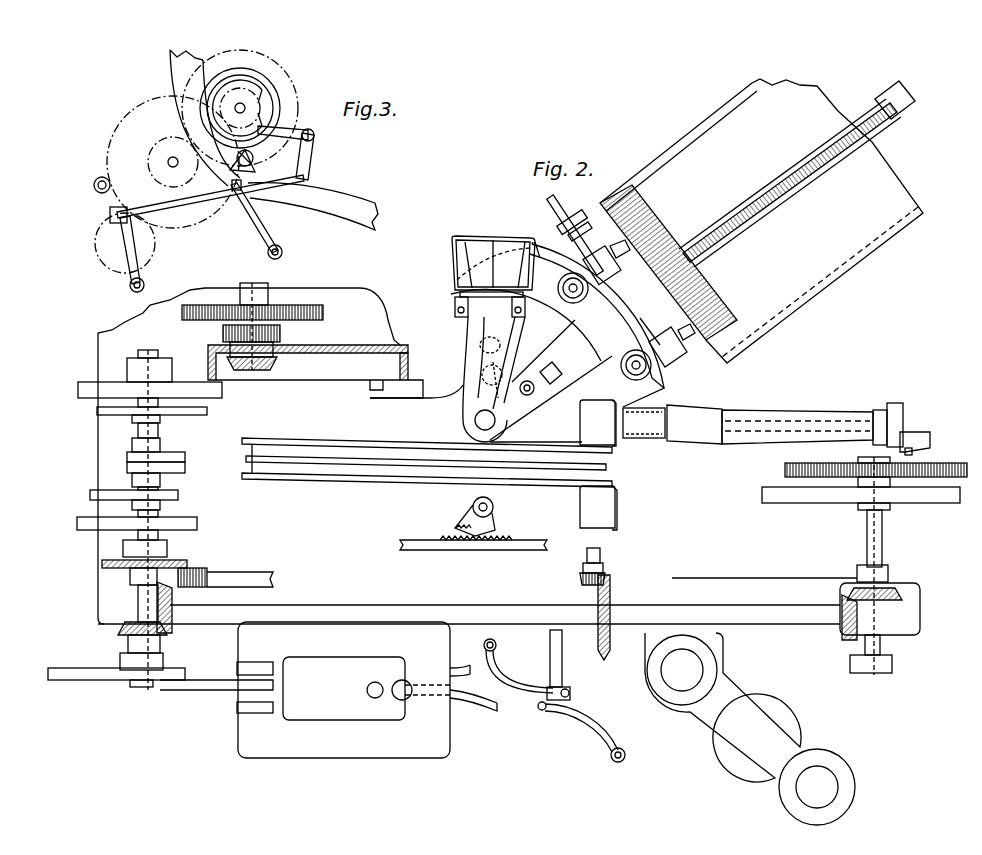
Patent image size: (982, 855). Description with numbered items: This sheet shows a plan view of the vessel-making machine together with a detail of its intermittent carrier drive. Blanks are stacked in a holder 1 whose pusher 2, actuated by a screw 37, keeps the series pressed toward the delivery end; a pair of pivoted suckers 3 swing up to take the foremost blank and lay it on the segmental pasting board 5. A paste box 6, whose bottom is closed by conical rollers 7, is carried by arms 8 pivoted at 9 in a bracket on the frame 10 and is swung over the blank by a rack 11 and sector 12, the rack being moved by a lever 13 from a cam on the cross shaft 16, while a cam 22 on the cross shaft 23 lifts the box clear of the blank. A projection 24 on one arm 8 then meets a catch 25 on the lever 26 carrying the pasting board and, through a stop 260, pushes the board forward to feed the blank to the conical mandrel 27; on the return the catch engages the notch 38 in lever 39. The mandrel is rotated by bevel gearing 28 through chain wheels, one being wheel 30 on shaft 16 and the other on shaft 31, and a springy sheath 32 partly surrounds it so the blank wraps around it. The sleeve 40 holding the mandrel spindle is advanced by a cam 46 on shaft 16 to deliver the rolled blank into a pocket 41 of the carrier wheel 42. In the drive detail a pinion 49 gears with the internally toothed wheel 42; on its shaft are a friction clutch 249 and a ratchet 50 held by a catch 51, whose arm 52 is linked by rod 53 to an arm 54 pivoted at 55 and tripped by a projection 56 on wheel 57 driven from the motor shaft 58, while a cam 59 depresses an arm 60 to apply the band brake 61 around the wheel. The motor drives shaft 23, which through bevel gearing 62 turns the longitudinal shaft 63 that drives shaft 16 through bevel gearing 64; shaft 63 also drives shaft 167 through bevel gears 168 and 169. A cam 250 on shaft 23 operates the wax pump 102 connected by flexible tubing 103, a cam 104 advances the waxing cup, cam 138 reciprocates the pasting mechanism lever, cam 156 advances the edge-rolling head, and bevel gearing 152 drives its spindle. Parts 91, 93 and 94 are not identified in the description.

In FIG. 2, the holder 1 is at (761, 221).
In FIG. 2, the pusher 2 is at (713, 284).
In FIG. 2, the screw 37 is at (768, 188).
In FIG. 2, the suckers 3 is at (621, 287).
In FIG. 2, the pasting board 5 is at (557, 342).
In FIG. 2, the paste box 6 is at (484, 276).
In FIG. 2, the conical rollers 7 is at (495, 264).
In FIG. 2, the arms 8 is at (496, 368).
In FIG. 2, the pivot 9 is at (474, 421).
In FIG. 2, the frame 10 is at (260, 453).
In FIG. 2, the rack 11 is at (480, 548).
In FIG. 2, the sector 12 is at (464, 516).
In FIG. 2, the crank arm or lever 13 is at (473, 551).
In FIG. 2, the shaft 16 is at (880, 566).
In FIG. 2, the cam 22 is at (163, 415).
In FIG. 2, the cross shaft 23 is at (135, 595).
In FIG. 2, the projection 24 is at (479, 344).
In FIG. 2, the catch 25 is at (530, 379).
In FIG. 2, the lever 26 is at (551, 395).
In FIG. 2, the mandrel 27 is at (694, 424).
In FIG. 2, the bevel gearing 28 is at (905, 420).
In FIG. 2, the chain wheel 30 is at (785, 466).
In FIG. 2, the shaft 31 is at (913, 456).
In FIG. 2, the sheath 32 is at (644, 423).
In FIG. 2, the notch 38 is at (500, 370).
In FIG. 2, the lever 39 is at (416, 387).
In FIG. 2, the sleeve 40 is at (797, 419).
In FIG. 2, the pockets 41 is at (598, 465).
In FIG. 3, the carrier wheel 42 is at (313, 206).
In FIG. 2, the carrier wheel 42 is at (427, 467).
In FIG. 2, the cam 46 is at (861, 503).
In FIG. 3, the pinion 49 is at (240, 108).
In FIG. 3, the ratchet 50 is at (298, 84).
In FIG. 3, the catch 51 is at (306, 127).
In FIG. 3, the arm 52 is at (314, 156).
In FIG. 3, the rod 53 is at (210, 196).
In FIG. 3, the arm 54 is at (135, 250).
In FIG. 3, the pivot 55 is at (148, 285).
In FIG. 3, the projection 56 is at (110, 214).
In FIG. 3, the wheel 57 is at (113, 243).
In FIG. 3, the motor shaft 58 is at (89, 185).
In FIG. 3, the cam 59 is at (230, 181).
In FIG. 3, the arm 60 is at (255, 221).
In FIG. 2, the band brake 61 is at (608, 467).
In FIG. 2, the bevel gearing 62 is at (133, 626).
In FIG. 2, the longitudinal shaft 63 is at (477, 601).
In FIG. 2, the bevel gearing 64 is at (880, 628).
In FIG. 2, the plate 91 is at (143, 397).
In FIG. 2, the worm wheel 93 is at (104, 560).
In FIG. 2, the worm 94 is at (212, 591).
In FIG. 2, the pump 102 is at (343, 690).
In FIG. 2, the flexible tubing 103 is at (510, 670).
In FIG. 2, the cam 104 is at (537, 726).
In FIG. 2, the cam 138 is at (130, 518).
In FIG. 2, the bevel gearing 152 is at (252, 330).
In FIG. 2, the cam 156 is at (164, 520).
In FIG. 2, the shaft 167 is at (600, 553).
In FIG. 2, the bevel gear 168 is at (612, 585).
In FIG. 2, the bevel gear 169 is at (580, 580).
In FIG. 3, the friction clutch 249 is at (219, 118).
In FIG. 2, the cam 250 is at (160, 672).
In FIG. 2, the stop 260 is at (556, 386).